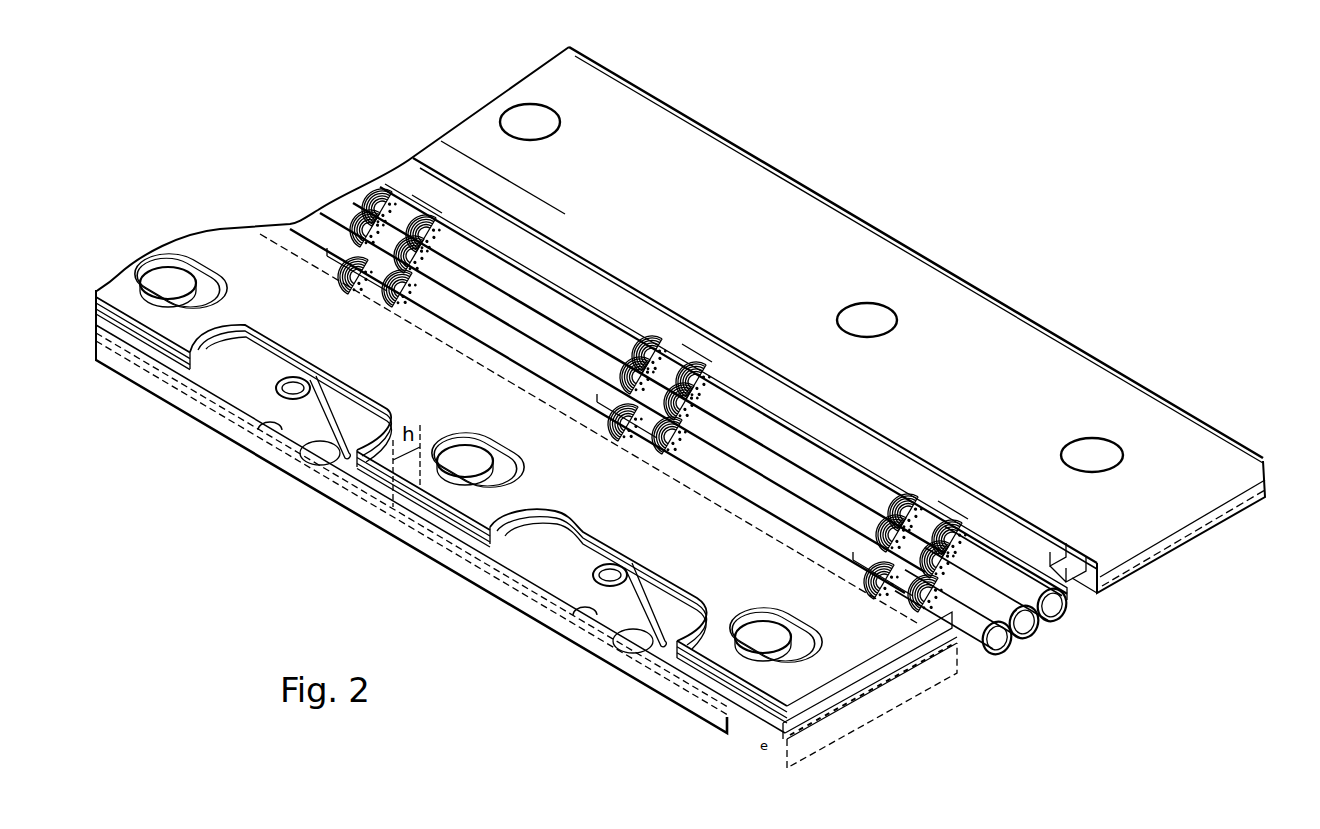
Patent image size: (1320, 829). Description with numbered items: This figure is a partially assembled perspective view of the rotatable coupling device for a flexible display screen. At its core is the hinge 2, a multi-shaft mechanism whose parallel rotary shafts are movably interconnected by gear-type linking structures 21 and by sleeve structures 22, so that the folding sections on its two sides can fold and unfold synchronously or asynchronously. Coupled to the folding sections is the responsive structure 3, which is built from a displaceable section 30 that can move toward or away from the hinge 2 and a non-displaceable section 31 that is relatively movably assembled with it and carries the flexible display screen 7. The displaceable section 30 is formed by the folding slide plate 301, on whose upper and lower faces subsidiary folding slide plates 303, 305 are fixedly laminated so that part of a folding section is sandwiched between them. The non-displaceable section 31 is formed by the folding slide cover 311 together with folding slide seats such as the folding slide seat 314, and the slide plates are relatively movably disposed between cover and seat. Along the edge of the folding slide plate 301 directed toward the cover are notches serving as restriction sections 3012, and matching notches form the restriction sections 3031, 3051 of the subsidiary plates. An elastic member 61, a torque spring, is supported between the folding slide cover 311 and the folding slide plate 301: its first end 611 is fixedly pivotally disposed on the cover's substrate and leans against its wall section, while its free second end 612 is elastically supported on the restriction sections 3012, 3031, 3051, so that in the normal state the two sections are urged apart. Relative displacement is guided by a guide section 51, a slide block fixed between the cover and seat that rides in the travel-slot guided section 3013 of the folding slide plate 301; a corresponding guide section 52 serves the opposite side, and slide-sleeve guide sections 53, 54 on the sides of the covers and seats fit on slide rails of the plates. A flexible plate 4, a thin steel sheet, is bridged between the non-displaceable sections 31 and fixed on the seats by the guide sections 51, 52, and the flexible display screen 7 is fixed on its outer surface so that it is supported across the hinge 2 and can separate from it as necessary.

The hinge 2 is at (1035, 652).
The responsive structure 3 is at (681, 719).
The flexible plate 4 is at (968, 648).
The flexible display screen 7 is at (1228, 443).
The linking structures 21 is at (905, 512).
The sleeve structures 22 is at (858, 487).
The displaceable section 30 is at (526, 526).
The non-displaceable section 31 is at (691, 382).
The guide section 51 is at (468, 455).
The guide section 52 is at (868, 318).
The guide section 53 is at (780, 745).
The guide section 54 is at (1263, 483).
The elastic member 61 is at (665, 613).
The folding slide plate 301 is at (488, 532).
The subsidiary folding slide plate 303 is at (477, 497).
The subsidiary folding slide plate 305 is at (490, 547).
The folding slide cover 311 is at (520, 600).
The folding slide seat 314 is at (738, 203).
The first end 611 is at (605, 612).
The second end 612 is at (637, 587).
The restriction sections 3012 is at (192, 372).
The guided section 3013 is at (513, 443).
The restriction sections 3031 is at (170, 357).
The restriction sections 3051 is at (232, 383).